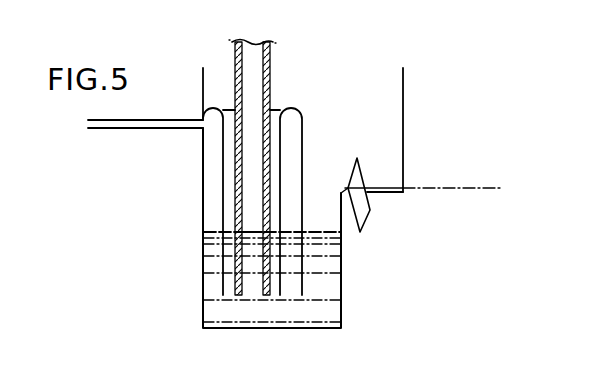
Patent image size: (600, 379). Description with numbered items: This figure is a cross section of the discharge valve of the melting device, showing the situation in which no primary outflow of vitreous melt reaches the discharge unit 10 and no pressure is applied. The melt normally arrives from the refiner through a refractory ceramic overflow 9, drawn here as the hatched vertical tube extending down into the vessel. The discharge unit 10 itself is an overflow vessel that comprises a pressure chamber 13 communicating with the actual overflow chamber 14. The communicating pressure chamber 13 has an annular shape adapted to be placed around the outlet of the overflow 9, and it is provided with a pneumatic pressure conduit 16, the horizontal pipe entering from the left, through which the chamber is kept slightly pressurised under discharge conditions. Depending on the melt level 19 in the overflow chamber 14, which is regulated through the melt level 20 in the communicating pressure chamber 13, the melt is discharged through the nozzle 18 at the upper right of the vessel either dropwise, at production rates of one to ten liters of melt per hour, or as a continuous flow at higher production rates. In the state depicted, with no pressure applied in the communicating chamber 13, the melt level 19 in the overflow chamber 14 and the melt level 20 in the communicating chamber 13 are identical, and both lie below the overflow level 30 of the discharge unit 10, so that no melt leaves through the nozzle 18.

The refractory ceramic overflow 9 is at (272, 86).
The discharge unit 10 is at (345, 260).
The pressure chamber 13 is at (212, 174).
The overflow chamber 14 is at (328, 290).
The pneumatic pressure conduit 16 is at (140, 121).
The nozzle 18 is at (362, 212).
The melt level in the overflow chamber 19 is at (252, 232).
The melt level in the communicating pressure chamber 20 is at (212, 228).
The overflow level 30 is at (460, 180).